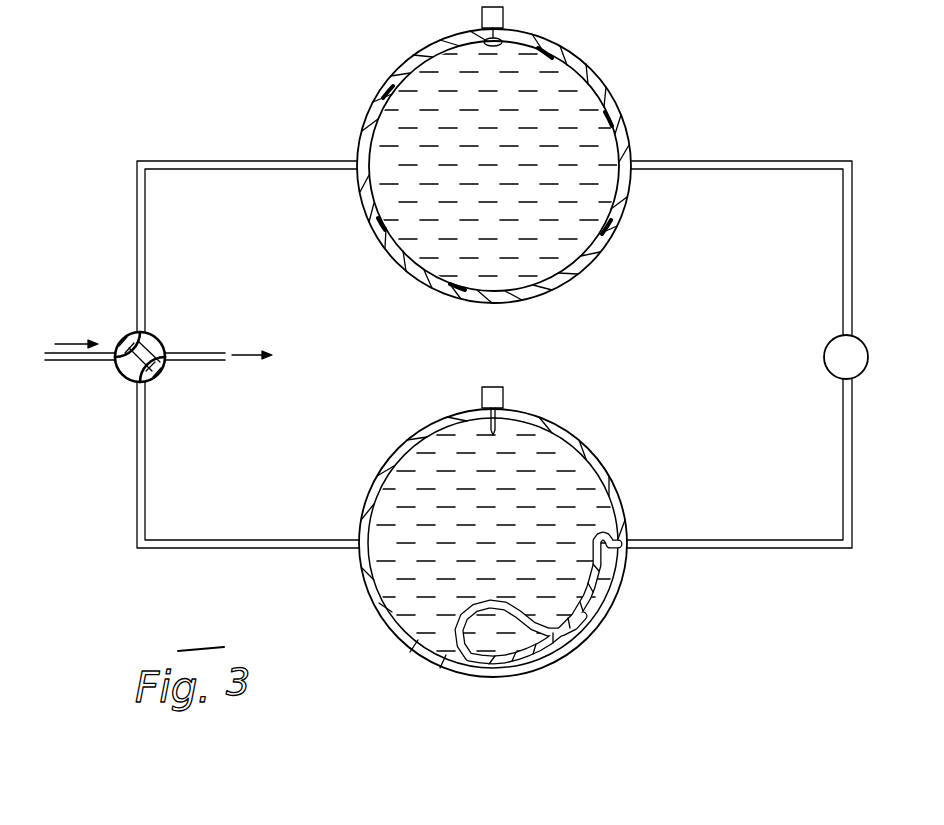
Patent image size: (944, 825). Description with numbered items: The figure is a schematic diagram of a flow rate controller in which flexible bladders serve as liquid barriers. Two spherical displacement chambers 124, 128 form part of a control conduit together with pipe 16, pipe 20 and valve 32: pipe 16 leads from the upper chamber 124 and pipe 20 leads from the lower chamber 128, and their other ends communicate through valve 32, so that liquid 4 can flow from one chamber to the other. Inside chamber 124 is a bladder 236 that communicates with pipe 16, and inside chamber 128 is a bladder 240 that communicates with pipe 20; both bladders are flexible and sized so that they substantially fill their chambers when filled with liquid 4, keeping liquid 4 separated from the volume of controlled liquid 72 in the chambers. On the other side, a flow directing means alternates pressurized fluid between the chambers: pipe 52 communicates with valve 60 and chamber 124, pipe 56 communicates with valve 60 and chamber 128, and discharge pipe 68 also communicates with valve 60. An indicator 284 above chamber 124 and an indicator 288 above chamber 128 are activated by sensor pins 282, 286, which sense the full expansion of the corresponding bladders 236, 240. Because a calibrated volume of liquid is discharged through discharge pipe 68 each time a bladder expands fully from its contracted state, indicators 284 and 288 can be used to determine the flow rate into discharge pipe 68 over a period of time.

The liquid 4 is at (560, 110).
The pipe 16 is at (852, 246).
The pipe 20 is at (856, 455).
The valve 32 is at (868, 357).
The pipe 52 is at (222, 160).
The pipe 56 is at (225, 540).
The valve 60 is at (123, 375).
The discharge pipe 68 is at (198, 352).
The controlled liquid 72 is at (420, 498).
The spherical displacement chamber 124 is at (574, 272).
The spherical displacement chamber 128 is at (592, 458).
The bladder 236 is at (594, 238).
The bladder 240 is at (580, 647).
The sensor pin 282 is at (515, 36).
The indicator 284 is at (481, 17).
The sensor pin 286 is at (505, 418).
The indicator 288 is at (481, 397).